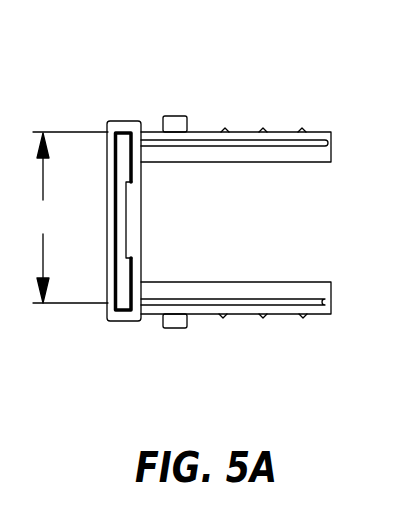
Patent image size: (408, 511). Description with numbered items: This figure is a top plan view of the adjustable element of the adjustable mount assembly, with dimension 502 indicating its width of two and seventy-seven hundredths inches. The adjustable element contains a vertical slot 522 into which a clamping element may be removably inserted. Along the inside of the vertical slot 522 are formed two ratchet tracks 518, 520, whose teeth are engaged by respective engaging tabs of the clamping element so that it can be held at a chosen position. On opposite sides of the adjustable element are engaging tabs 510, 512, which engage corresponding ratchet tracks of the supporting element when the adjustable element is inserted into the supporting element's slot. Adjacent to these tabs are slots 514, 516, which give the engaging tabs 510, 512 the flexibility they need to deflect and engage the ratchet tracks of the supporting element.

The dimension 502 is at (64, 217).
The engaging tab 510 is at (266, 131).
The engaging tab 512 is at (223, 316).
The slot 514 is at (323, 127).
The slot 516 is at (325, 320).
The ratchet track 518 is at (125, 131).
The ratchet track 520 is at (122, 317).
The vertical slot 522 is at (134, 181).